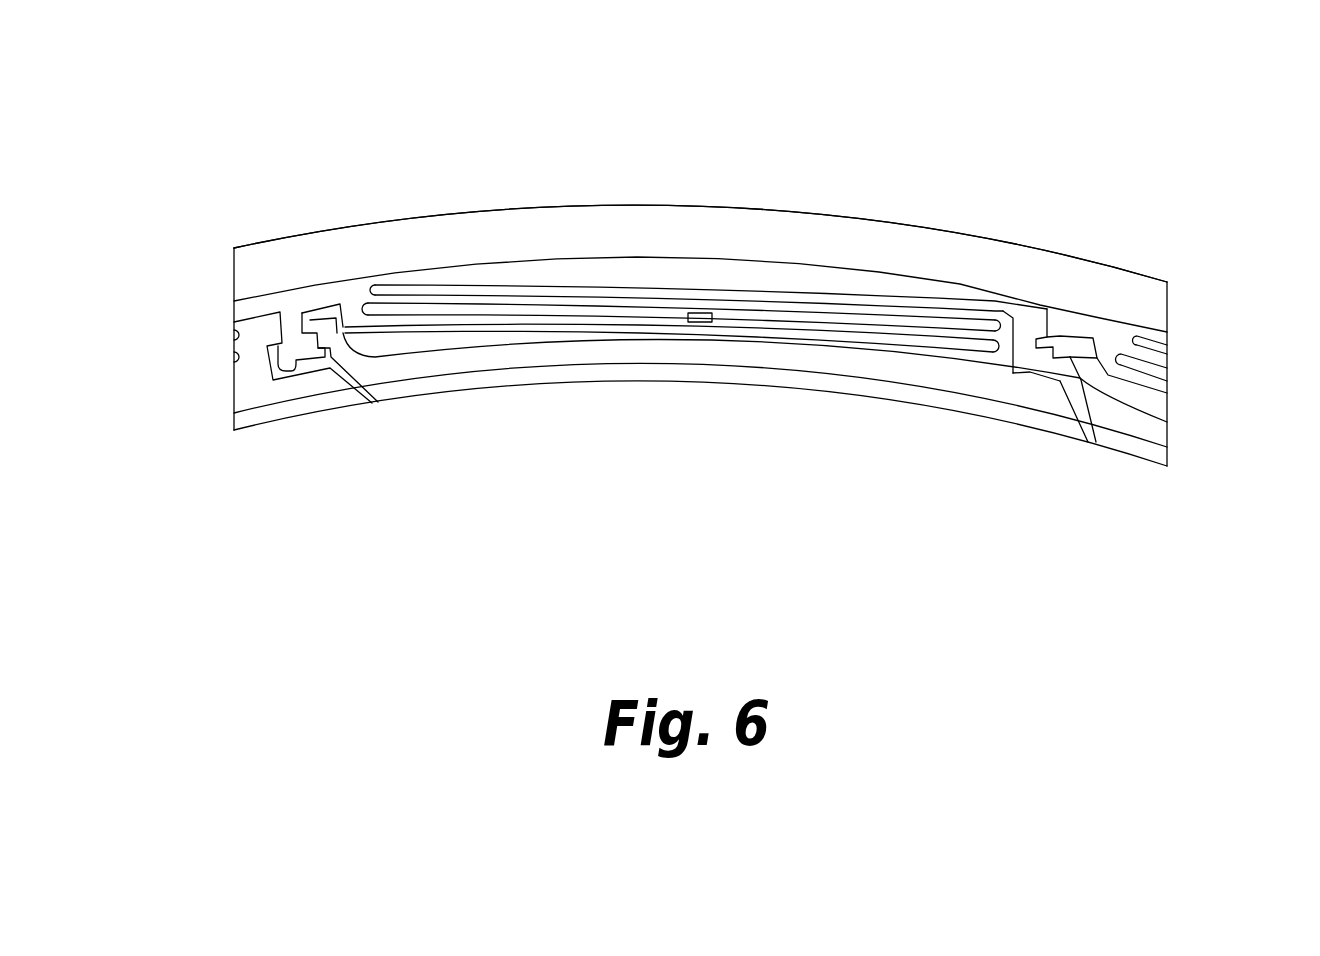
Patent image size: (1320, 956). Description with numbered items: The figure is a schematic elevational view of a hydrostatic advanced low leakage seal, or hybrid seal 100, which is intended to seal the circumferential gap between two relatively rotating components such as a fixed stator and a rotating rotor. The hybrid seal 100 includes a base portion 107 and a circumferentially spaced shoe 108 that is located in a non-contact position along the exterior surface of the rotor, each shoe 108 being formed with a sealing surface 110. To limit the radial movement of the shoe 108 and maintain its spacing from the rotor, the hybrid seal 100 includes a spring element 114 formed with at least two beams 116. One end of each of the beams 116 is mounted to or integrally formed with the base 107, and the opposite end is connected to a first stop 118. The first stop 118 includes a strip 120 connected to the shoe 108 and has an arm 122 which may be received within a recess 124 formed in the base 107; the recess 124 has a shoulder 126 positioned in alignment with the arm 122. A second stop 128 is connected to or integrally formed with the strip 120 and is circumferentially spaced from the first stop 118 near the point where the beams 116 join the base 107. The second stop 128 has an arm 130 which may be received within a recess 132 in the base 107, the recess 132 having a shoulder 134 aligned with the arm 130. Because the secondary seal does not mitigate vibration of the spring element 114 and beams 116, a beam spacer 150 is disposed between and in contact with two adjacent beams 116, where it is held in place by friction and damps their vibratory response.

The hybrid seal 100 is at (1150, 134).
The base portion 107 is at (420, 235).
The shoe 108 is at (524, 389).
The sealing surface 110 is at (645, 383).
The spring element 114 is at (568, 298).
The beam 116 is at (642, 305).
The first stop 118 is at (1013, 322).
The strip 120 is at (1002, 355).
The arm 122 is at (1028, 328).
The recess 124 is at (1037, 338).
The shoulder 126 is at (1028, 365).
The second stop 128 is at (333, 332).
The arm 130 is at (312, 322).
The recess 132 is at (303, 320).
The shoulder 134 is at (317, 355).
The beam spacer 150 is at (698, 322).